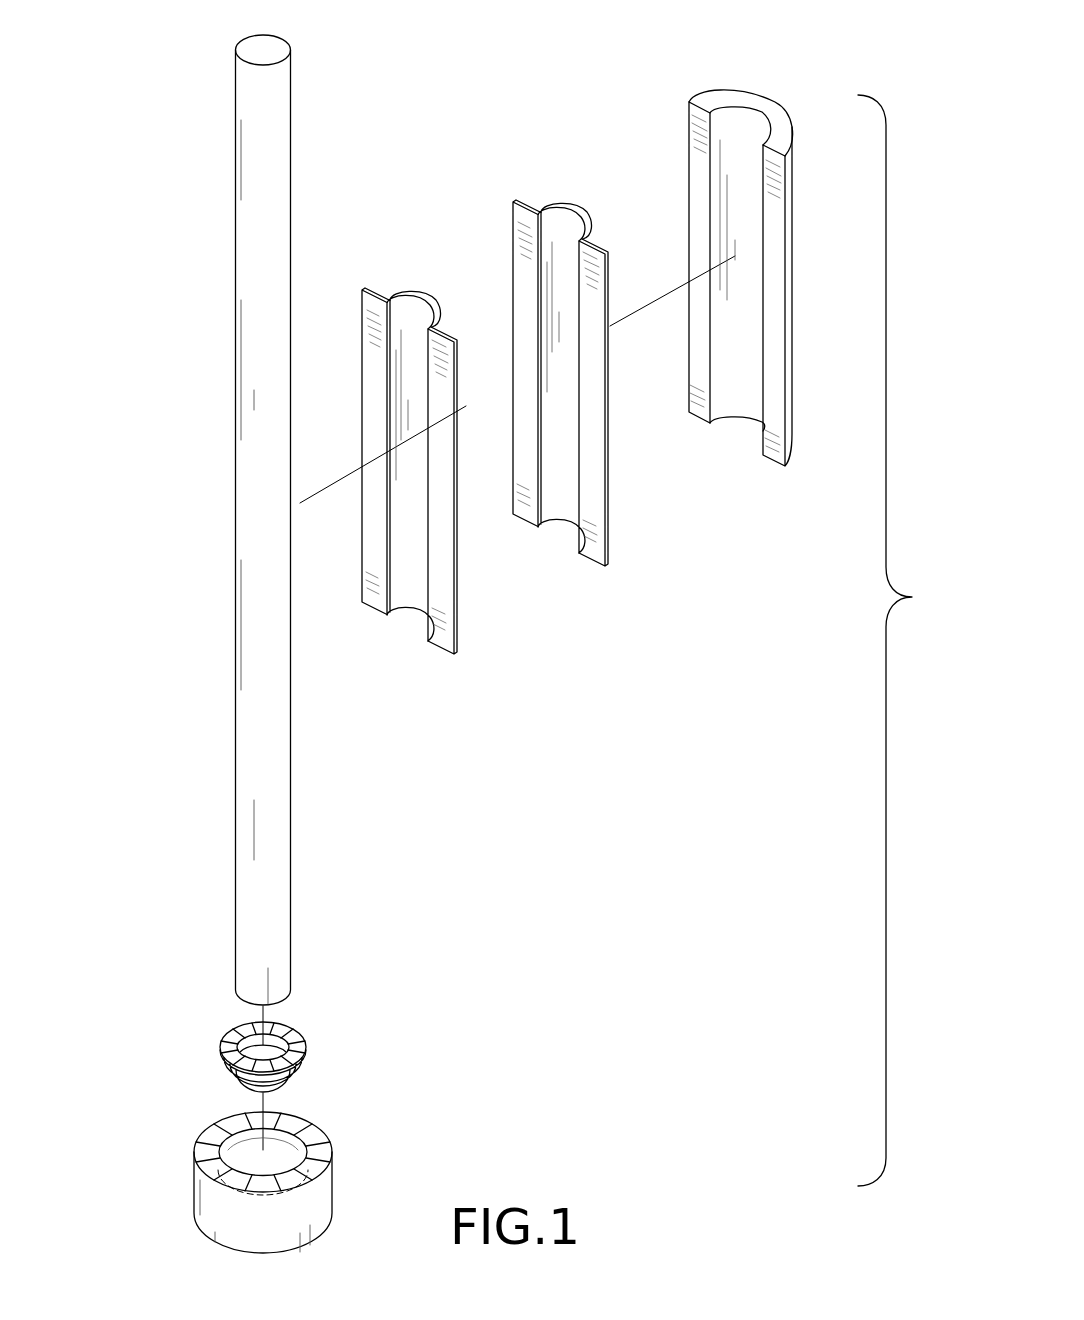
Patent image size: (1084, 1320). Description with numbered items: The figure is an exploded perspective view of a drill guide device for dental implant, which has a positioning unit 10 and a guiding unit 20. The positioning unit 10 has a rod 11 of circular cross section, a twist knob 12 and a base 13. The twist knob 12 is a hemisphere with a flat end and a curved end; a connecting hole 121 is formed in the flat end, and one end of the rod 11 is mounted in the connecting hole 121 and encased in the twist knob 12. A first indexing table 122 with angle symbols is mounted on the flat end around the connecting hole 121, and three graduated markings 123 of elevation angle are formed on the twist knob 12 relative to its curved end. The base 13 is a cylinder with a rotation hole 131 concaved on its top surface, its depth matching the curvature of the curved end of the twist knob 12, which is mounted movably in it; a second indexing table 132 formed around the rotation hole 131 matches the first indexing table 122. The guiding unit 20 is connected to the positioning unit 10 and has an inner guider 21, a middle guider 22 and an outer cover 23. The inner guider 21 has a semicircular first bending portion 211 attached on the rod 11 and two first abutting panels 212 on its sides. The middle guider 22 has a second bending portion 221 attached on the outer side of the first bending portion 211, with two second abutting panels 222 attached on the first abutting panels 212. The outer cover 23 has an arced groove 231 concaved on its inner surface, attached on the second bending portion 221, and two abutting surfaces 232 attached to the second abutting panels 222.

The positioning unit 10 is at (227, 520).
The rod 11 is at (247, 187).
The twist knob 12 is at (272, 1065).
The connecting hole 121 is at (283, 1047).
The first indexing table 122 is at (222, 1042).
The graduated markings of elevation angle 123 is at (300, 1083).
The base 13 is at (248, 1180).
The rotation hole 131 is at (296, 1150).
The second indexing table 132 is at (197, 1155).
The guiding unit 20 is at (589, 381).
The inner guider 21 is at (410, 476).
The first bending portion 211 is at (410, 293).
The first abutting panels 212 is at (441, 625).
The middle guider 22 is at (596, 396).
The second bending portion 221 is at (590, 224).
The second abutting panels 222 is at (590, 540).
The outer cover 23 is at (777, 261).
The arced groove 231 is at (748, 108).
The abutting surfaces 232 is at (697, 347).